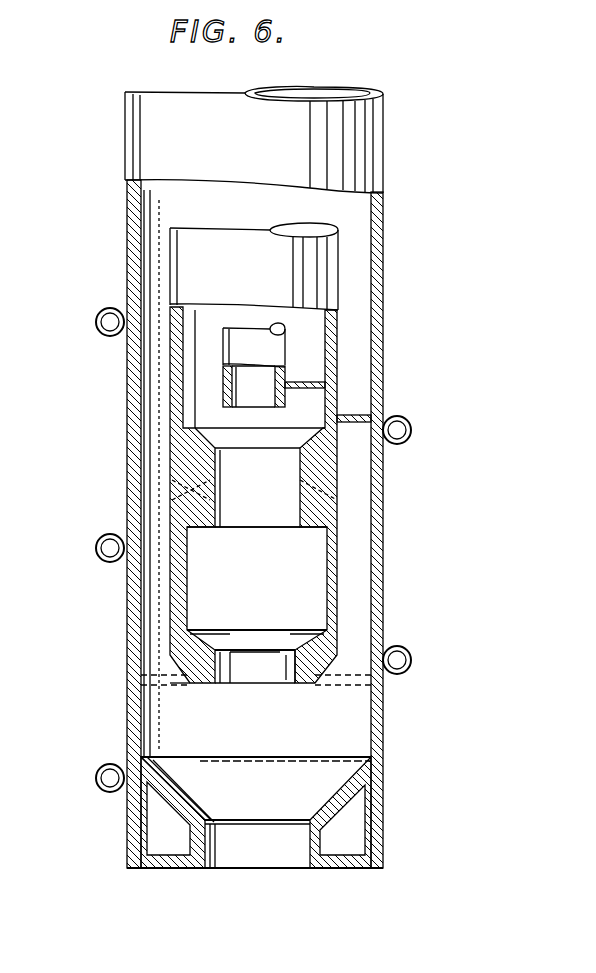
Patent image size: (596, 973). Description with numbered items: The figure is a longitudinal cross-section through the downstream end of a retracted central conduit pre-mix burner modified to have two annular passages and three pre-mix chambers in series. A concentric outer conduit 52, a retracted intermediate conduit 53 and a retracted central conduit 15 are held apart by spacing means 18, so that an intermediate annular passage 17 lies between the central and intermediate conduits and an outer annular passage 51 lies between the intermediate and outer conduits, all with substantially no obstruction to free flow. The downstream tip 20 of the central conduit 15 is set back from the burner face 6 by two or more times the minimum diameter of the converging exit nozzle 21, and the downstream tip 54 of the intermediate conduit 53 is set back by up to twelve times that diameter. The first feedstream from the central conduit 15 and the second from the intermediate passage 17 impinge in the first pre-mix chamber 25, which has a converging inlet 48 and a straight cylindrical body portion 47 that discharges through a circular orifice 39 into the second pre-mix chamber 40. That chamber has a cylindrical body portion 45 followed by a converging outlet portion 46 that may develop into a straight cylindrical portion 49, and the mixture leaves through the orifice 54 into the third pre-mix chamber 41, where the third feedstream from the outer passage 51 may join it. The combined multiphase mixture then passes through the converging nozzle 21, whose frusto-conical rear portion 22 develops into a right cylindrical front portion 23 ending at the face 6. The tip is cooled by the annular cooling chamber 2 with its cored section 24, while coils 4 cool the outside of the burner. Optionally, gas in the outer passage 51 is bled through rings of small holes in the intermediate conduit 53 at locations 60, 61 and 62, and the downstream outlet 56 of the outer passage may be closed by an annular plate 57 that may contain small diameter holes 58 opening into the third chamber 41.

The cooling chamber 2 is at (127, 822).
The coils 4 is at (96, 775).
The face 6 is at (197, 870).
The central conduit 15 is at (230, 342).
The intermediate annular passage 17 is at (308, 343).
The spacing means 18 is at (312, 396).
The exit orifice 20 is at (268, 406).
The converging exit nozzle 21 is at (315, 774).
The frusto-conical rear portion 22 is at (170, 795).
The right cylindrical front portion 23 is at (255, 852).
The cored section 24 is at (160, 842).
The first pre-mix chamber 25 is at (270, 514).
The circular orifice 39 is at (222, 528).
The second pre-mix chamber 40 is at (250, 598).
The third pre-mix chamber 41 is at (276, 754).
The cylindrical body portion 45 is at (323, 582).
The converging outlet portion 46 is at (258, 642).
The straight cylindrical body portion 47 is at (270, 528).
The converging inlet 48 is at (246, 438).
The straight cylindrical portion 49 is at (284, 668).
The outer annular passage 51 is at (358, 344).
The outer conduit 52 is at (336, 115).
The intermediate conduit 53 is at (263, 244).
The downstream tip of intermediate conduit 54 is at (250, 686).
The downstream outlet 56 is at (172, 684).
The annular plate 57 is at (141, 690).
The small diameter holes 58 is at (346, 688).
The bleed location 60 is at (172, 360).
The bleed location 61 is at (185, 468).
The bleed location 62 is at (175, 568).